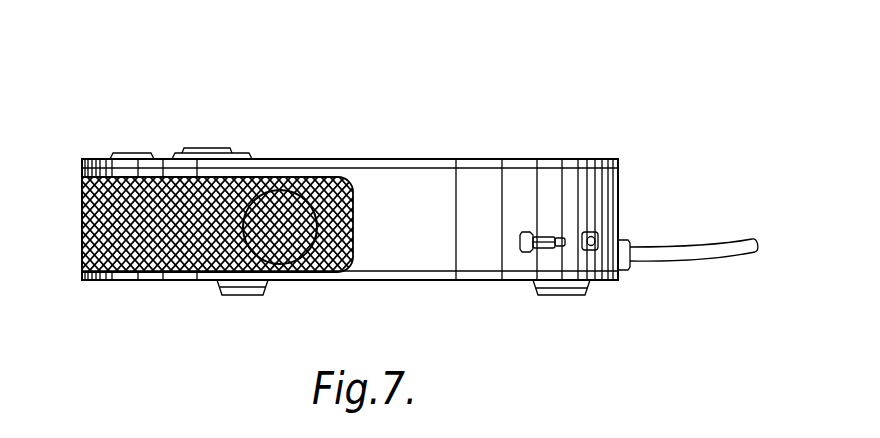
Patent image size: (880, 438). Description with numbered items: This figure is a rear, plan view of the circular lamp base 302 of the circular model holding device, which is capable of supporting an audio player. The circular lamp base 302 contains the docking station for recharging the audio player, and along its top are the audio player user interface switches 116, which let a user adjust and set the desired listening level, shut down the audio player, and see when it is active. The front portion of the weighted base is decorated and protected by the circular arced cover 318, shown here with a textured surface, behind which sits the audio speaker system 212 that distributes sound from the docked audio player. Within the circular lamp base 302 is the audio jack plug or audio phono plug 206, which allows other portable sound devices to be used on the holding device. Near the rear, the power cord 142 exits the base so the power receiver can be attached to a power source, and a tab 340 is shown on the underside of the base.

The circular lamp base 302 is at (542, 124).
The audio player user interface switches 116 is at (135, 155).
The circular arced cover 318 is at (97, 247).
The audio speaker system 212 is at (311, 263).
The audio jack plug or audio phono plug 206 is at (523, 250).
The mounting tab 340 is at (575, 290).
The power cord 142 is at (655, 258).